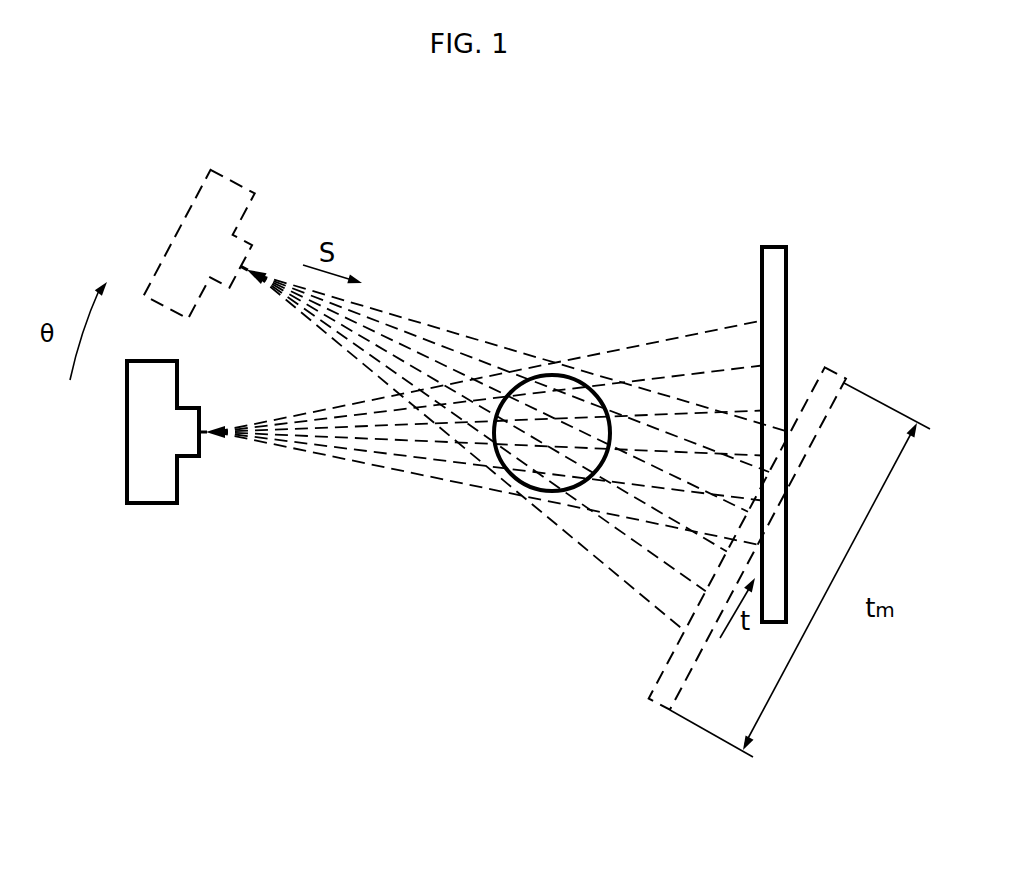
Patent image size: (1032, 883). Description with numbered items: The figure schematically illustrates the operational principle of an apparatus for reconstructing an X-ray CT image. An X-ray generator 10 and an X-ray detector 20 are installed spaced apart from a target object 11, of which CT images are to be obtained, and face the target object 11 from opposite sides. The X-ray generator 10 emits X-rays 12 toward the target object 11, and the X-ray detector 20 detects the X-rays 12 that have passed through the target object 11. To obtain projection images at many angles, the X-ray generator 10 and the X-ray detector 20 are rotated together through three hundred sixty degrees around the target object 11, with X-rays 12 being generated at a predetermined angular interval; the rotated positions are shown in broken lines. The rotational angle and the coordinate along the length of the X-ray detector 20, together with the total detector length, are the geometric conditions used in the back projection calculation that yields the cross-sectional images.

The X-ray generator 10 is at (125, 432).
The target object 11 is at (553, 374).
The X-rays 12 is at (361, 470).
The X-ray detector 20 is at (787, 275).